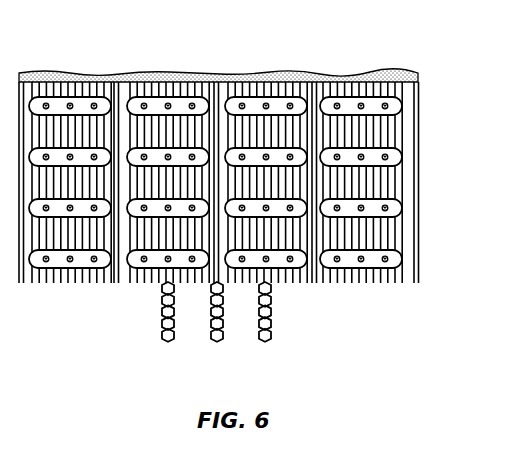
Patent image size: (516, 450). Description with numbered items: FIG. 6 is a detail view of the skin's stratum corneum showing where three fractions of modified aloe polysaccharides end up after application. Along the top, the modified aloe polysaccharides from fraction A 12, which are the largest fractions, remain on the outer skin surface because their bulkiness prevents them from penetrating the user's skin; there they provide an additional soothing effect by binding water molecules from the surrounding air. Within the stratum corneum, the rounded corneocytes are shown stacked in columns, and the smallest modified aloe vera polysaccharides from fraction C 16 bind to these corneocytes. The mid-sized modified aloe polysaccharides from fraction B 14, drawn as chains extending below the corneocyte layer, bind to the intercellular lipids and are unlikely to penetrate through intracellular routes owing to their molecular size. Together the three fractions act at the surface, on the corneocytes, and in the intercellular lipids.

The fraction A 12 is at (287, 41).
The fraction C 16 is at (451, 139).
The fraction B 14 is at (278, 314).